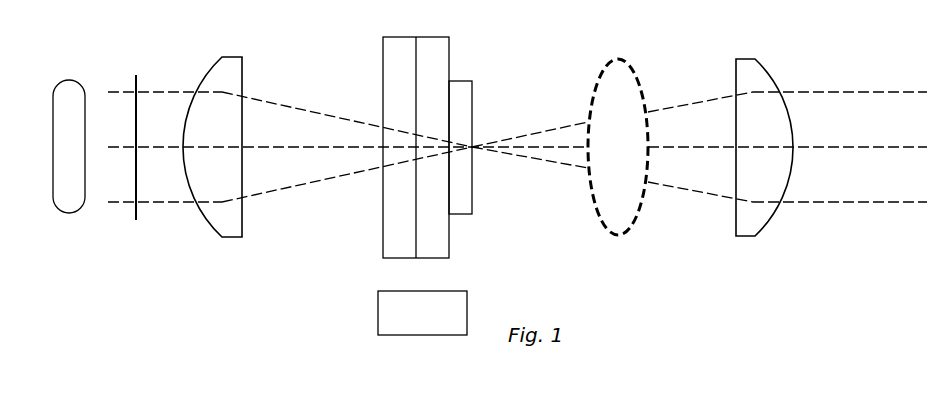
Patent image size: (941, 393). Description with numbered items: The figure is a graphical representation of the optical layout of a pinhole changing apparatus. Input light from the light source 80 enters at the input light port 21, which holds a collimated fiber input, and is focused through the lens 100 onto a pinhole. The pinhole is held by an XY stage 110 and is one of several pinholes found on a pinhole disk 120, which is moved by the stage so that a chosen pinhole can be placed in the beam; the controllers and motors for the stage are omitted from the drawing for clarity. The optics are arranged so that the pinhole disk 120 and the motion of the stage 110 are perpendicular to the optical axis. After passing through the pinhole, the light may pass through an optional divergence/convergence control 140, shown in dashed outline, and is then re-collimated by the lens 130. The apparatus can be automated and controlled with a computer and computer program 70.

The light source 80 is at (72, 80).
The input light port 21 is at (142, 73).
The lens 100 is at (231, 62).
The XY stage 110 is at (426, 31).
The pinhole disk 120 is at (468, 84).
The divergence/convergence control 140 is at (628, 62).
The lens 130 is at (755, 65).
The computer and computer program 70 is at (470, 311).